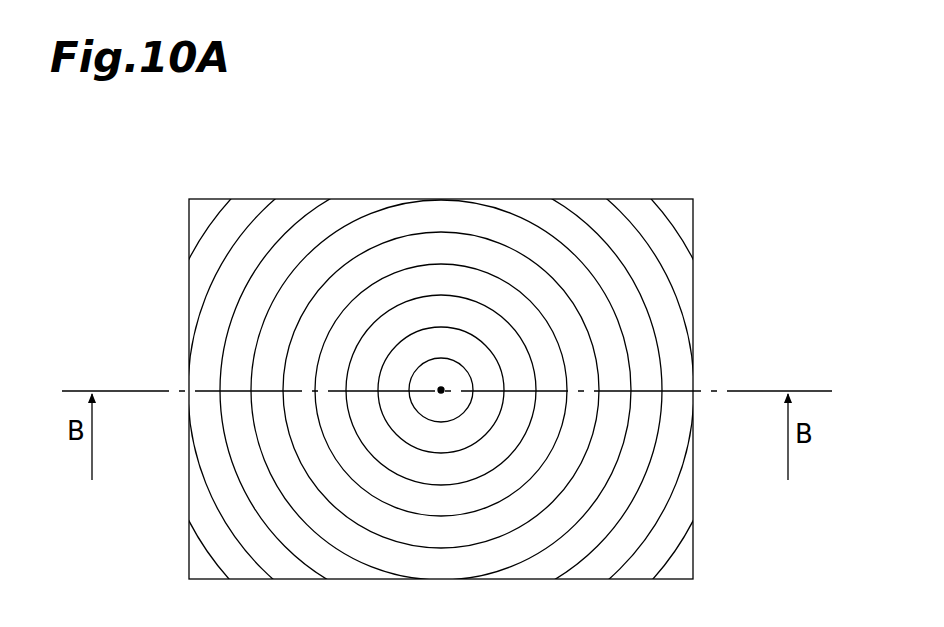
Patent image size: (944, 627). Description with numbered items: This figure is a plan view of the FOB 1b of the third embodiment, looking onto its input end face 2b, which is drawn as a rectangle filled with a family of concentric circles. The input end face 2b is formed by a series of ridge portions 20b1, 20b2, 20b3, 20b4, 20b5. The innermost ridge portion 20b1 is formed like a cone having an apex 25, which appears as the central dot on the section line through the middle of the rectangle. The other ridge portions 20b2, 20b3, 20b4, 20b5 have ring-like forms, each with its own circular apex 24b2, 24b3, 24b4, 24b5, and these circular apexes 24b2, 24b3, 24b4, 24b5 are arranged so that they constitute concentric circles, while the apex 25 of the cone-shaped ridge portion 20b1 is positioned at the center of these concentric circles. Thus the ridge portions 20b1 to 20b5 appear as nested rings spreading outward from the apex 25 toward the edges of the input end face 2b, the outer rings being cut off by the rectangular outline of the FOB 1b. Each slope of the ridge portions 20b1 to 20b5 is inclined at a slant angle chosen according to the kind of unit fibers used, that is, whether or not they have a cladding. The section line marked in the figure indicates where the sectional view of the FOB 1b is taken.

The FOB 1b is at (112, 287).
The input end face 2b is at (189, 353).
The apex 25 is at (441, 388).
The ridge portion 20b1 is at (448, 370).
The ridge portion 20b2 is at (518, 357).
The ridge portion 20b3 is at (612, 310).
The ridge portion 20b4 is at (689, 370).
The ridge portion 20b5 is at (693, 373).
The circular apex 24b2 is at (487, 340).
The circular apex 24b3 is at (580, 352).
The circular apex 24b4 is at (643, 347).
The circular apex 24b5 is at (685, 322).